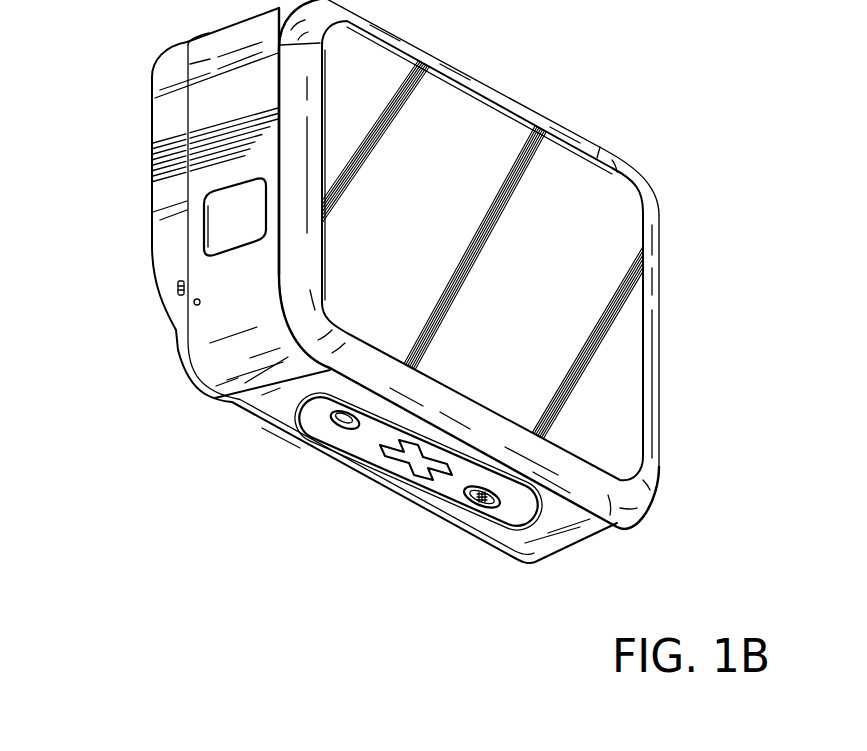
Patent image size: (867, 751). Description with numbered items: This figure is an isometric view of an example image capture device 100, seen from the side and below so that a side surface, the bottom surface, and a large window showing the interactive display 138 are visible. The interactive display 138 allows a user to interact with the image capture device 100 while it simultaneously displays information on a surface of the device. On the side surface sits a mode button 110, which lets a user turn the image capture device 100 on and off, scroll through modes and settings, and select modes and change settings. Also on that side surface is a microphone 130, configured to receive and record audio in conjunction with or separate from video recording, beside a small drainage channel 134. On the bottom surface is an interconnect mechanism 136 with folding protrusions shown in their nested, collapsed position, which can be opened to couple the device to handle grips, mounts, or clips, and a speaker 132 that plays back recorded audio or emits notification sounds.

The image capture device 100 is at (394, 307).
The mode button 110 is at (206, 222).
The microphone 130 is at (192, 305).
The speaker 132 is at (480, 503).
The drainage channel 134 is at (170, 284).
The interconnect mechanism 136 is at (345, 441).
The interactive display 138 is at (618, 372).